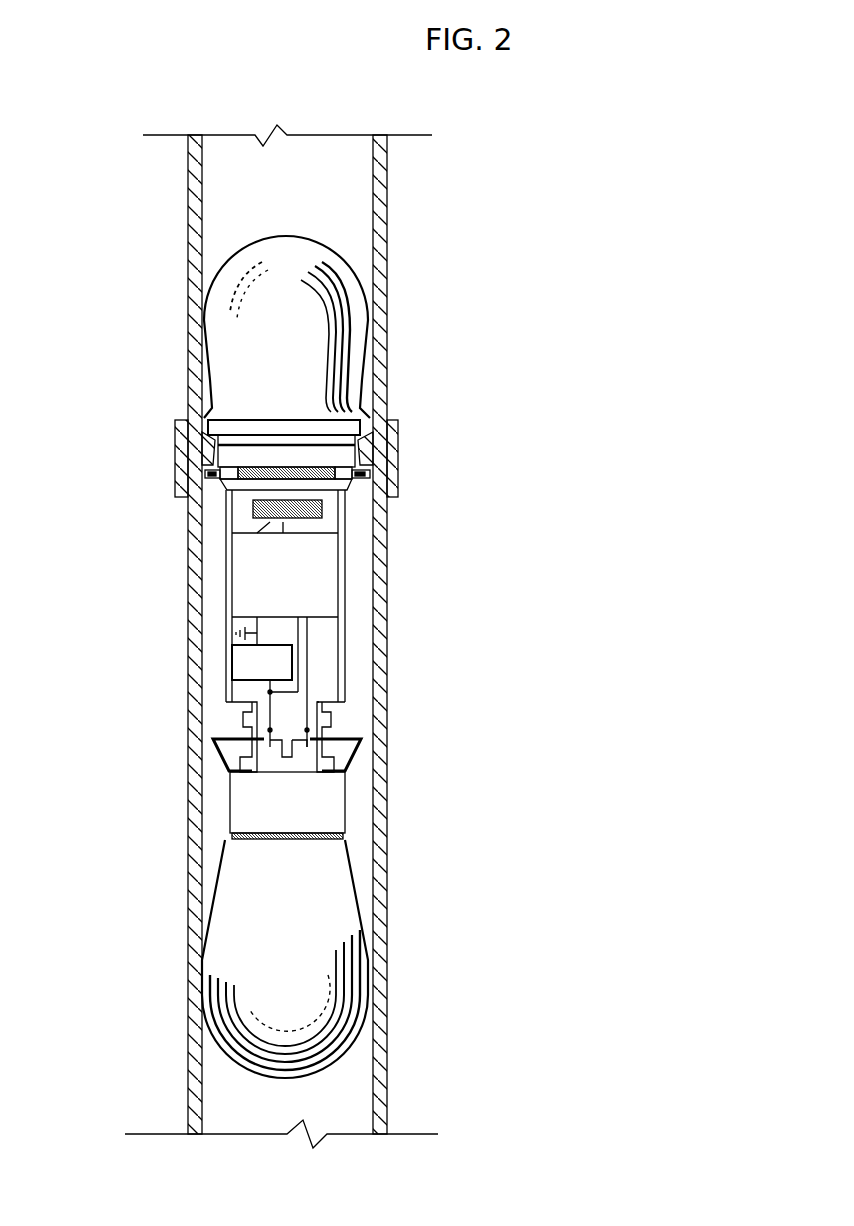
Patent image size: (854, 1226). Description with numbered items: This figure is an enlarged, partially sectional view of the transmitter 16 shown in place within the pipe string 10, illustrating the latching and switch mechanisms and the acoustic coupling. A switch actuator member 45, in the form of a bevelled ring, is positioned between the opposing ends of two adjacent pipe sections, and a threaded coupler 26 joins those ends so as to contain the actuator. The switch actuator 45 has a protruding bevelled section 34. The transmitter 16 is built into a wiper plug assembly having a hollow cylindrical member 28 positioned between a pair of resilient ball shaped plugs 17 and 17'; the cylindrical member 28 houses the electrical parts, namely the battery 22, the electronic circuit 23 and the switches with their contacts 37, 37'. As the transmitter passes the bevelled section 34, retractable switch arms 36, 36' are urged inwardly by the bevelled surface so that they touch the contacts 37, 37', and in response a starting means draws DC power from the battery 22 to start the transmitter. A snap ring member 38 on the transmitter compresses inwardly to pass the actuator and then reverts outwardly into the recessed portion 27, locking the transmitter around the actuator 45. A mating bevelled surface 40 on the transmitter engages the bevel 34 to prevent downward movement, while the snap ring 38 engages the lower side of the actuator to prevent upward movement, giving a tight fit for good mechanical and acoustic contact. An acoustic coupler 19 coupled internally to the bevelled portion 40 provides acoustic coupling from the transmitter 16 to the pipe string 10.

The pipe string 10 is at (188, 292).
The resilient ball shaped plug 17' is at (318, 319).
The mating bevelled surface 40 is at (323, 402).
The switch actuator member 45 is at (190, 423).
The protruding bevelled section 34 is at (397, 453).
The recessed portion 27 is at (196, 440).
The threaded coupler 26 is at (207, 474).
The acoustic coupler 19 is at (196, 488).
The snap ring member 38 is at (357, 476).
The transmitter 16 is at (225, 551).
The electronic circuit 23 is at (322, 583).
The hollow cylindrical member 28 is at (346, 647).
The battery 22 is at (253, 667).
The contact 37' is at (269, 751).
The contact 37 is at (314, 775).
The retractable switch arm 36' is at (183, 737).
The retractable switch arm 36 is at (398, 704).
The resilient ball shaped plug 17 is at (315, 925).